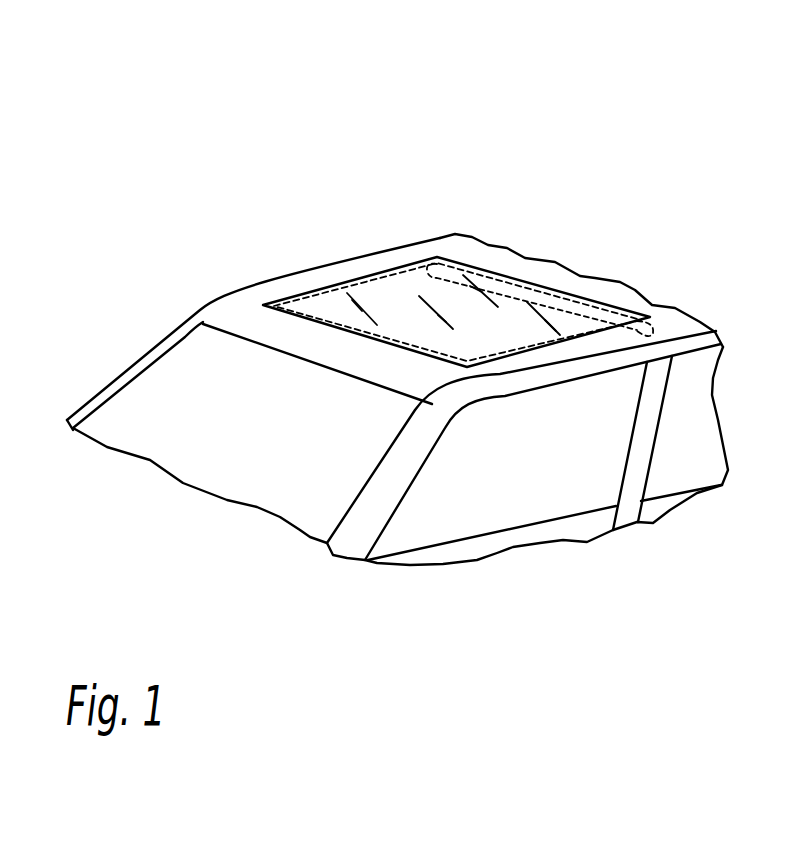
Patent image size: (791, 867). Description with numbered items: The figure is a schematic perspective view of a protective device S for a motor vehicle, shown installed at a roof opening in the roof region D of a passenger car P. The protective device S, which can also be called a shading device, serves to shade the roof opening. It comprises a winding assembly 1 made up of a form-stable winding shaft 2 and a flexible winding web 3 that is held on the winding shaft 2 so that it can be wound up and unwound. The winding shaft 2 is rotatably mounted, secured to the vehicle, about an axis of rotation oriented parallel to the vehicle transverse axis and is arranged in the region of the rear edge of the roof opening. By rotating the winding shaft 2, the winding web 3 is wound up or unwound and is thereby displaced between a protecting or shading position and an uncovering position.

The protective device S is at (418, 145).
The passenger car P is at (145, 274).
The roof region D is at (238, 308).
The winding assembly 1 is at (398, 257).
The winding shaft 2 is at (535, 292).
The winding web 3 is at (367, 292).